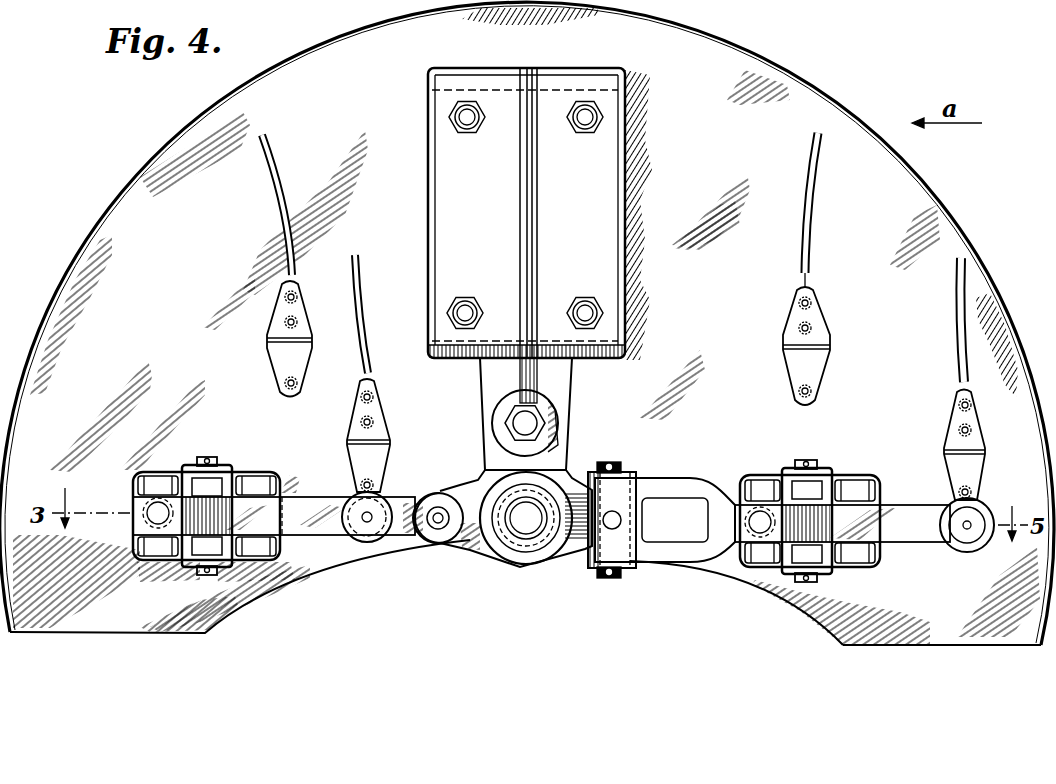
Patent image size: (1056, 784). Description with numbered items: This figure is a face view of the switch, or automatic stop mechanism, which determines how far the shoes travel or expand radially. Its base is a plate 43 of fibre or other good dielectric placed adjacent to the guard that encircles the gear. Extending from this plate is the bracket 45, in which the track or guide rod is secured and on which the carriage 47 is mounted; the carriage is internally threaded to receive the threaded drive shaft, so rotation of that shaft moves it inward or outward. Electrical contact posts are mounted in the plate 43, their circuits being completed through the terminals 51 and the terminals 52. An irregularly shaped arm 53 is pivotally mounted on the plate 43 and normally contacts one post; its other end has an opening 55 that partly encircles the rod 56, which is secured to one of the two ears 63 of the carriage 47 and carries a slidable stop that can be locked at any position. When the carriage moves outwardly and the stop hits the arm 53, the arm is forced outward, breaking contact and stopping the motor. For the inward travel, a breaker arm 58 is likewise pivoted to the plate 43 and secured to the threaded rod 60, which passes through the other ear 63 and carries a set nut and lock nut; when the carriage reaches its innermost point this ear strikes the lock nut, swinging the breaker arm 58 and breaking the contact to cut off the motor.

The plate 43 is at (851, 208).
The bracket 45 is at (557, 388).
The carriage 47 is at (528, 565).
The terminals 51 is at (820, 333).
The terminals 52 is at (308, 327).
The arm 53 is at (327, 525).
The opening 55 is at (450, 532).
The rod 56 is at (428, 503).
The breaker arm 58 is at (893, 537).
The rod 60 is at (633, 517).
The ears 63 is at (460, 538).